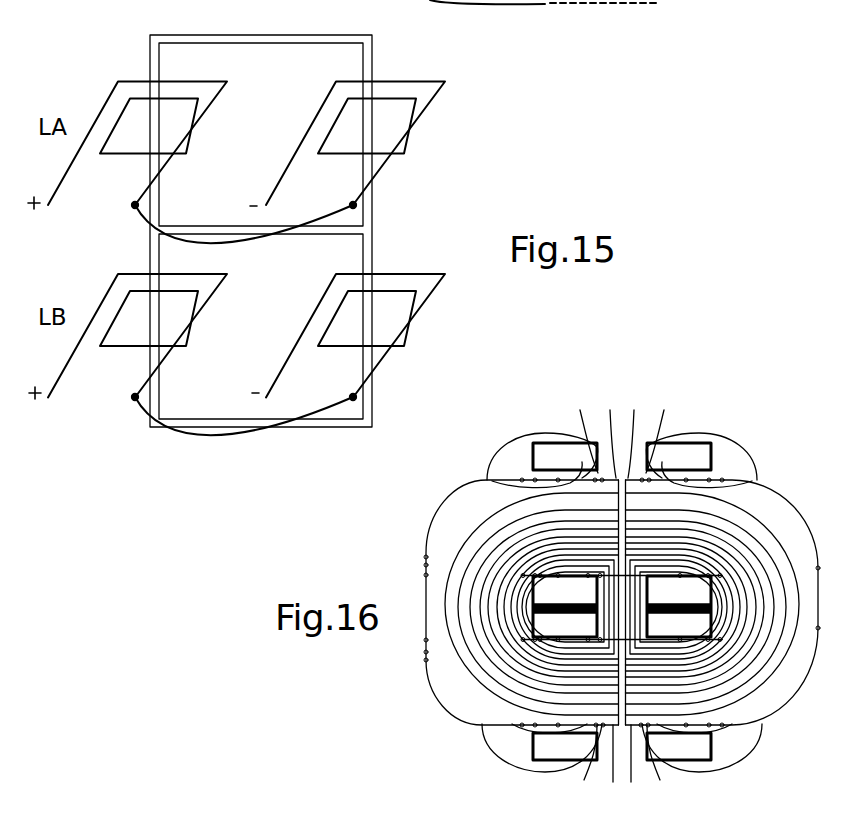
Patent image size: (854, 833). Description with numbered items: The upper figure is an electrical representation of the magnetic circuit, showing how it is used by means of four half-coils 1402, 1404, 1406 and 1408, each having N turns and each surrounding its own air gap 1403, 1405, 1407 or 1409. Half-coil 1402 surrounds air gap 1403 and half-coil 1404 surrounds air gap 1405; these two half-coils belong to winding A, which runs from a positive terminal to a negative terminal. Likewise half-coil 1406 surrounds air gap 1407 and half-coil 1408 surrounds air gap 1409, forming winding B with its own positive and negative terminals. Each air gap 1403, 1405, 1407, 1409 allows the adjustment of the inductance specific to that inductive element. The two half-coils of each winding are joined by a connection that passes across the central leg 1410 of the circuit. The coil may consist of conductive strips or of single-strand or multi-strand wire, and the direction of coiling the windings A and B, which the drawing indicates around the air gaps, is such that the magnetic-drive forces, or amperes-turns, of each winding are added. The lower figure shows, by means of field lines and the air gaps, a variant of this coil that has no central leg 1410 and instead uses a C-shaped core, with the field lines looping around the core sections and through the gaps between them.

The half-coil 1402 is at (117, 155).
The air gap 1403 is at (154, 123).
The half-coil 1404 is at (408, 147).
The air gap 1405 is at (368, 122).
The half-coil 1406 is at (117, 346).
The air gap 1407 is at (155, 315).
The half-coil 1408 is at (337, 346).
The air gap 1409 is at (368, 313).
The central leg 1410 is at (207, 230).